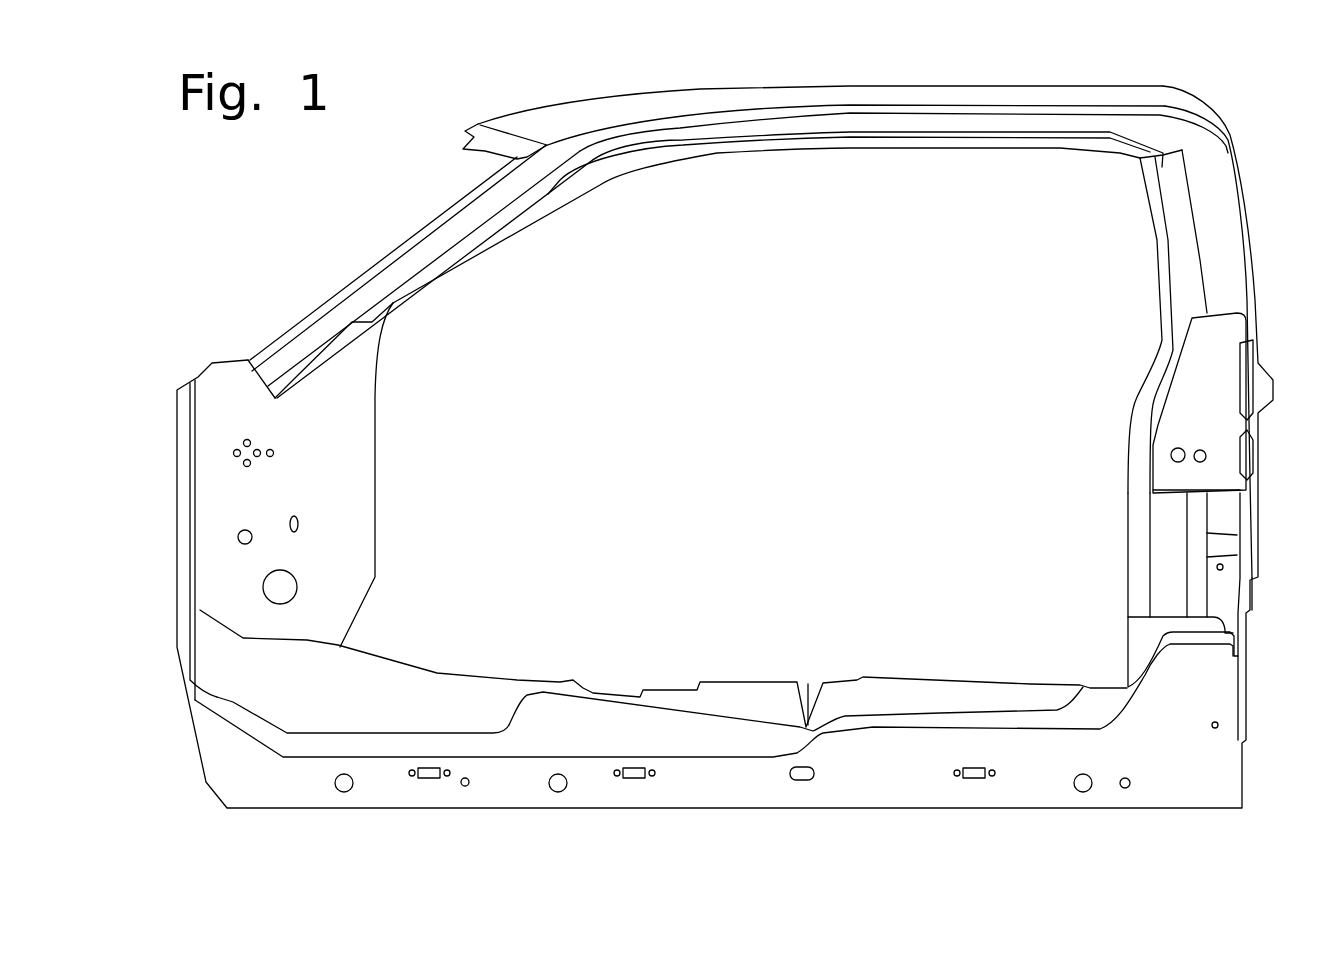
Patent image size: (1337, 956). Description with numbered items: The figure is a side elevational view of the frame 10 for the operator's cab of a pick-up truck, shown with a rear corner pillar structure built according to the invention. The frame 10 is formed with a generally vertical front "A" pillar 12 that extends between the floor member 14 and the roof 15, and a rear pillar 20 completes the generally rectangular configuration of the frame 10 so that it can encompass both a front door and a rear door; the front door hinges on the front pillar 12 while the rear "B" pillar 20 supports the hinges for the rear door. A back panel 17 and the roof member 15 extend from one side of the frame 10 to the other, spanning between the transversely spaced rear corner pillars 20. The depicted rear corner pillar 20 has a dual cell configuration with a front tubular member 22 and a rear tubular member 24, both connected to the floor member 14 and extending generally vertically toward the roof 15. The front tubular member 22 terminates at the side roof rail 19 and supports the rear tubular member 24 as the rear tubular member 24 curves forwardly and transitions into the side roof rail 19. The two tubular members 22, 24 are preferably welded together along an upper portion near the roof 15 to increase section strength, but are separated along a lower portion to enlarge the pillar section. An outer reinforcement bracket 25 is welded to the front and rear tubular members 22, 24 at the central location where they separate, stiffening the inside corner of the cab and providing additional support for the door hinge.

The frame 10 is at (497, 87).
The front pillar 12 is at (194, 368).
The floor member 14 is at (747, 690).
The roof 15 is at (882, 93).
The back panel 17 is at (1257, 513).
The side roof rail 19 is at (937, 150).
The rear corner pillar 20 is at (1113, 518).
The front tubular member 22 is at (1173, 205).
The rear tubular member 24 is at (1222, 280).
The outer reinforcement bracket 25 is at (1197, 403).